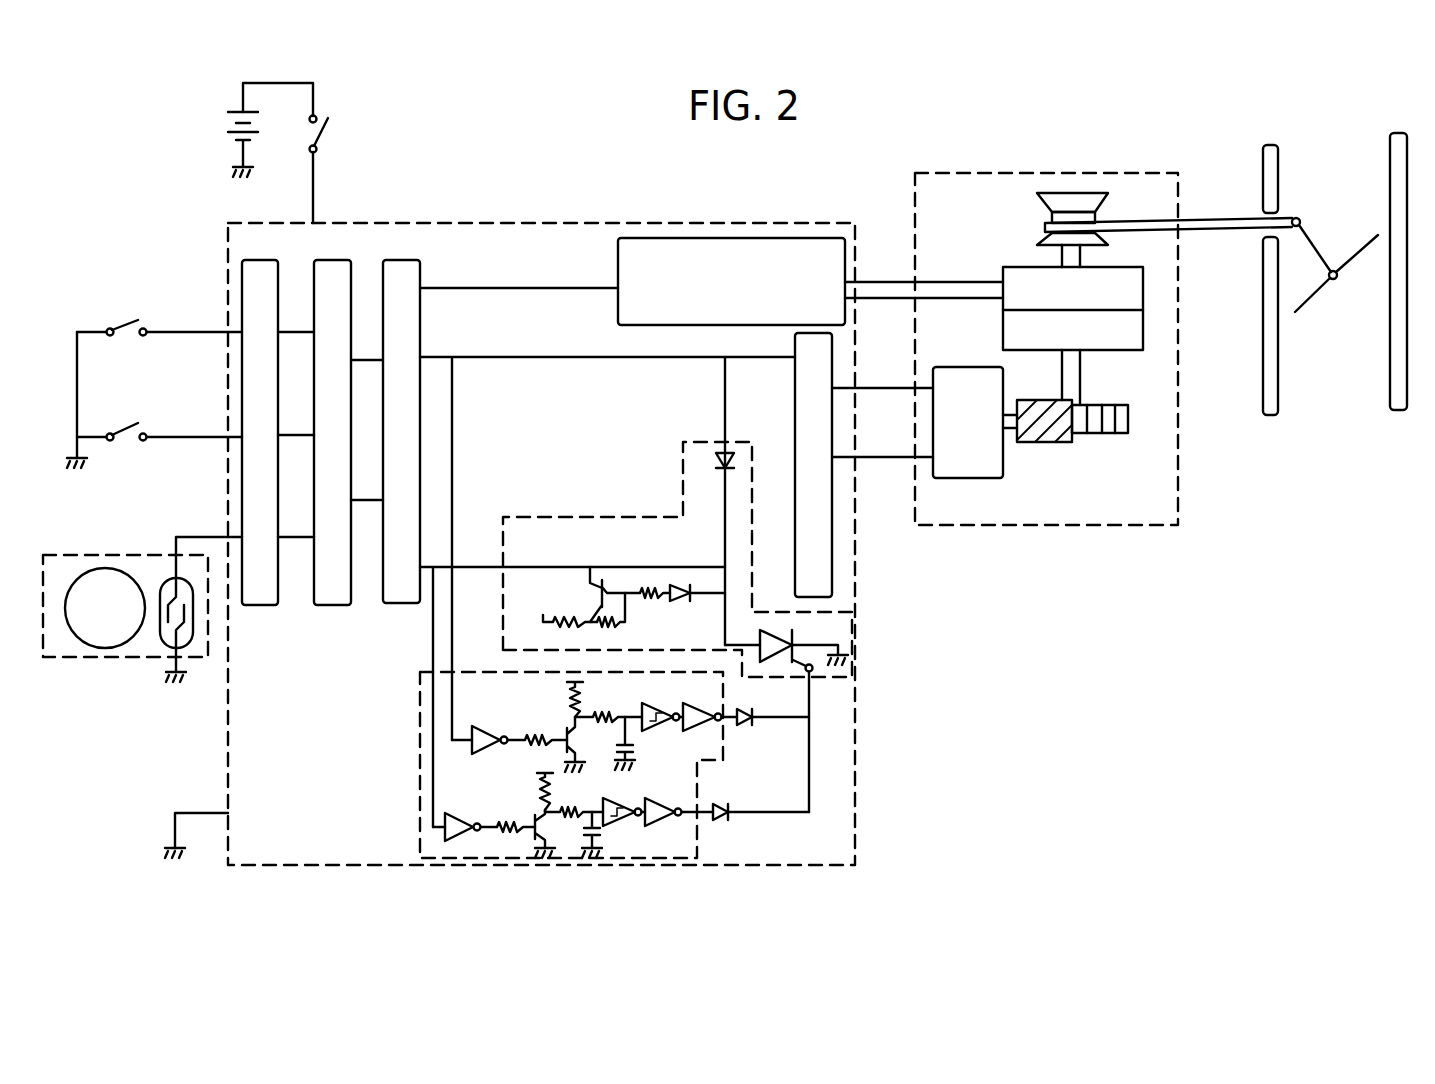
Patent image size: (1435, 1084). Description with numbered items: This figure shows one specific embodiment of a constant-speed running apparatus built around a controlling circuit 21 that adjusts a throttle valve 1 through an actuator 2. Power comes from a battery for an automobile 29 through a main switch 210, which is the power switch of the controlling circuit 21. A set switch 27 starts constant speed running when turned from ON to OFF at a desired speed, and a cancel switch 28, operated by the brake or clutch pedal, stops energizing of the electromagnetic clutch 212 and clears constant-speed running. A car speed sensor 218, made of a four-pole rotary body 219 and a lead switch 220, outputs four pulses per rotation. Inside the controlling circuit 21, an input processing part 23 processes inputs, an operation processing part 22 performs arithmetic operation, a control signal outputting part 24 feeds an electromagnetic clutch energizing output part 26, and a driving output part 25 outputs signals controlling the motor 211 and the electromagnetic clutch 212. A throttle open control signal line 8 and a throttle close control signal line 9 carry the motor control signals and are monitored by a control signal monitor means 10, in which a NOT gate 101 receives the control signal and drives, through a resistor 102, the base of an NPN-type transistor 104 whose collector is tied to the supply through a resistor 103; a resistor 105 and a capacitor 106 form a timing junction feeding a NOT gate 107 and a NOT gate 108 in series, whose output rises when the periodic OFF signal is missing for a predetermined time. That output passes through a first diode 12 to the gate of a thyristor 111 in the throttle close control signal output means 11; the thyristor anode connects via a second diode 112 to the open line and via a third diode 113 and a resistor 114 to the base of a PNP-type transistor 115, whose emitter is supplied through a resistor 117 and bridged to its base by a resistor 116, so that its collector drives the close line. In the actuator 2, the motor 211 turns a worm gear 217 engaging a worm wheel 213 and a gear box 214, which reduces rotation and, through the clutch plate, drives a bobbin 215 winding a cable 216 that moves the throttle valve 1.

The throttle valve 1 is at (1338, 358).
The actuator 2 is at (1092, 526).
The throttle open control signal line 8 is at (557, 310).
The throttle close control signal line 9 is at (571, 522).
The control signal monitor means 10 is at (432, 834).
The throttle close control signal output means 11 is at (832, 676).
The first diode 12 is at (725, 821).
The controlling circuit 21 is at (524, 221).
The operation processing part 22 is at (338, 612).
The input processing part 23 is at (260, 612).
The control signal outputting part 24 is at (398, 612).
The driving output part 25 is at (840, 598).
The electromagnetic clutch energizing output part 26 is at (775, 222).
The set switch 27 is at (129, 319).
The cancel switch 28 is at (133, 468).
The battery for an automobile 29 is at (227, 113).
The NOT gate 101 is at (453, 841).
The resistor 102 is at (507, 831).
The resistor 103 is at (528, 805).
The NPN-type transistor 104 is at (549, 830).
The resistor 105 is at (572, 824).
The capacitor 106 is at (612, 828).
The NOT gate 107 is at (635, 828).
The NOT gate 108 is at (680, 823).
The thyristor 111 is at (858, 630).
The second diode 112 is at (712, 460).
The third diode 113 is at (690, 607).
The resistor 114 is at (655, 602).
The PNP-type transistor 115 is at (588, 596).
The resistor 116 is at (611, 632).
The resistor 117 is at (543, 627).
The main switch 210 is at (337, 121).
The motor 211 is at (1003, 478).
The electromagnetic clutch 212 is at (1015, 267).
The worm wheel 213 is at (1130, 437).
The gear box 214 is at (1143, 333).
The bobbin 215 is at (1080, 193).
The cable 216 is at (1200, 217).
The worm gear 217 is at (1070, 442).
The car speed sensor 218 is at (165, 621).
The rotary body 219 is at (125, 650).
The lead switch 220 is at (195, 645).